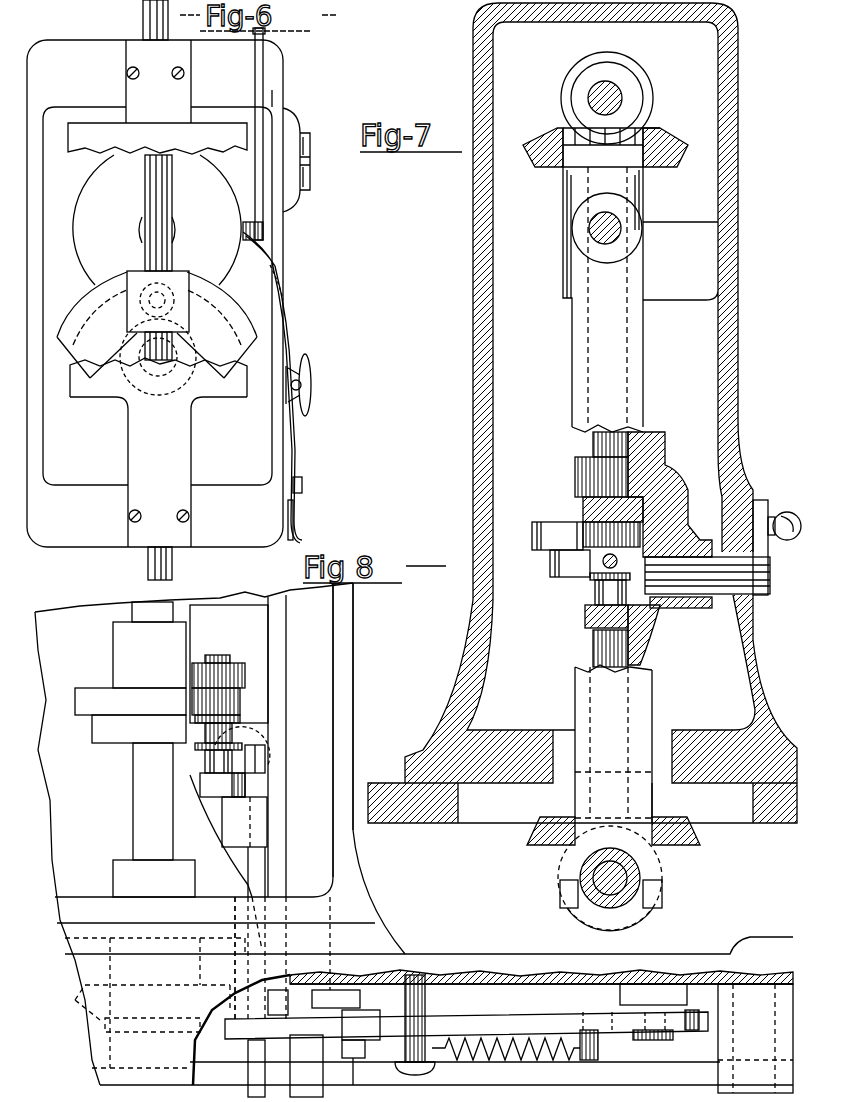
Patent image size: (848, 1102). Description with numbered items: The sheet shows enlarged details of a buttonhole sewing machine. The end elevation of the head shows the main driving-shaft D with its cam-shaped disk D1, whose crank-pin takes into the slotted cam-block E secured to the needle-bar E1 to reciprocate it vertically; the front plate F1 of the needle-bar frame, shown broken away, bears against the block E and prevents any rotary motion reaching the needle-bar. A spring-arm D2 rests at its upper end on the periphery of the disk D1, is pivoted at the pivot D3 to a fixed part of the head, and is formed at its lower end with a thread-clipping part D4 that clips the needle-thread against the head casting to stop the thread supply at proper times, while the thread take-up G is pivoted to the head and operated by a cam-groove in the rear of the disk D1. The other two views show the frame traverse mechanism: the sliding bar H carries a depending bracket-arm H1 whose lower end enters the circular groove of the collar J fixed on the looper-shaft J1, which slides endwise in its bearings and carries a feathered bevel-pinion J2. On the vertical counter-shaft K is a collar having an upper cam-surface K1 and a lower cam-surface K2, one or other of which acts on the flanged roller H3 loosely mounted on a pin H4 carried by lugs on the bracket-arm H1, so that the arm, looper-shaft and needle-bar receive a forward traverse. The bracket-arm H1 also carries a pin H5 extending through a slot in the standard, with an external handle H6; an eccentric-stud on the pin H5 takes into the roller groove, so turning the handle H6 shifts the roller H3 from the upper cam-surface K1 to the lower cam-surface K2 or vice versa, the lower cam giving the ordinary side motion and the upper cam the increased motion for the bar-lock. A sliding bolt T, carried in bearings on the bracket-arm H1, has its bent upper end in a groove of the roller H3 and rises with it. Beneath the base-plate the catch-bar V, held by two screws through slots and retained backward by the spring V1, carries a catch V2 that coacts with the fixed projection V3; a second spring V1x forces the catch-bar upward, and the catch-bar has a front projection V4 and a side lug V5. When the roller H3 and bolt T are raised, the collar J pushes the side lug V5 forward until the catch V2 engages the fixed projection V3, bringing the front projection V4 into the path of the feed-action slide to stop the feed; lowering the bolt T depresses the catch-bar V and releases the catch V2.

In FIG. 6, the thread take-up G is at (257, 93).
In FIG. 6, the front plate F1 is at (157, 260).
In FIG. 6, the needle-bar E1 is at (150, 258).
In FIG. 6, the cam-shaped disk D1 is at (157, 220).
In FIG. 6, the spring-arm D2 is at (270, 265).
In FIG. 6, the slotted cam-block E is at (157, 333).
In FIG. 6, the pivot D3 is at (312, 385).
In FIG. 6, the thread-clipping part D4 is at (298, 520).
In FIG. 7, the main driving-shaft D is at (618, 108).
In FIG. 7, the sliding bar H is at (605, 222).
In FIG. 8, the sliding bar H is at (229, 664).
In FIG. 7, the bracket-arm H1 is at (626, 645).
In FIG. 8, the bracket-arm H1 is at (277, 822).
In FIG. 7, the vertical counter-shaft K is at (593, 441).
In FIG. 8, the vertical counter-shaft K is at (154, 749).
In FIG. 7, the pin H4 is at (573, 612).
In FIG. 8, the pin H4 is at (212, 762).
In FIG. 7, the roller H3 is at (595, 535).
In FIG. 8, the roller H3 is at (222, 697).
In FIG. 7, the upper cam-surface K1 is at (557, 536).
In FIG. 8, the upper cam-surface K1 is at (130, 701).
In FIG. 7, the lower cam-surface K2 is at (570, 563).
In FIG. 8, the lower cam-surface K2 is at (139, 729).
In FIG. 7, the sliding bolt T is at (596, 590).
In FIG. 8, the sliding bolt T is at (222, 1003).
In FIG. 7, the pin H5 is at (683, 575).
In FIG. 7, the handle H6 is at (784, 541).
In FIG. 7, the bevel-pinion J2 is at (613, 874).
In FIG. 7, the looper-shaft J1 is at (640, 885).
In FIG. 8, the looper-shaft J1 is at (223, 981).
In FIG. 8, the fixed projection V3 is at (340, 990).
In FIG. 8, the catch V2 is at (370, 1010).
In FIG. 8, the catch-bar V is at (466, 1026).
In FIG. 8, the front projection V4 is at (697, 1032).
In FIG. 8, the spring V1x is at (371, 1049).
In FIG. 8, the side lug V5 is at (365, 1079).
In FIG. 8, the spring V1 is at (525, 1055).
In FIG. 8, the collar J is at (297, 1066).